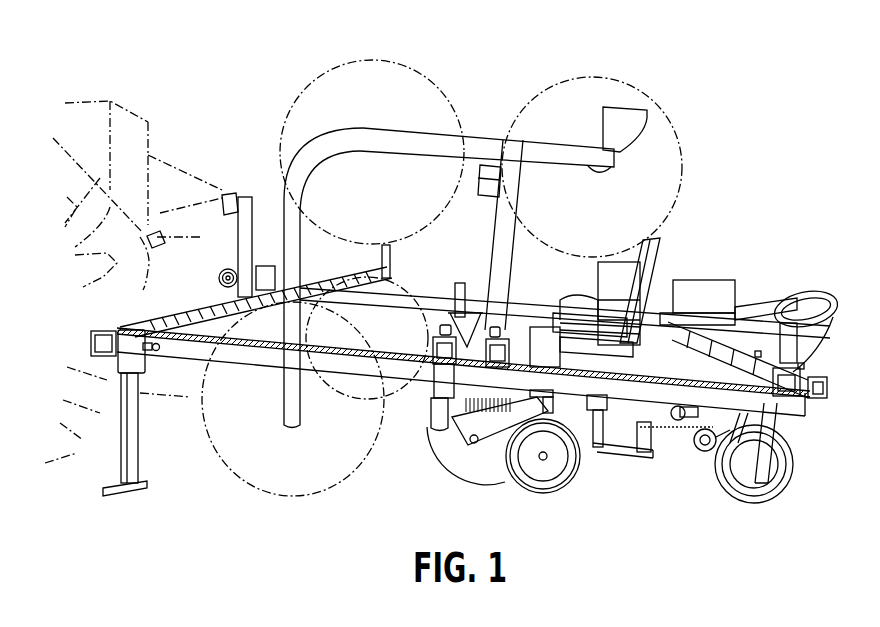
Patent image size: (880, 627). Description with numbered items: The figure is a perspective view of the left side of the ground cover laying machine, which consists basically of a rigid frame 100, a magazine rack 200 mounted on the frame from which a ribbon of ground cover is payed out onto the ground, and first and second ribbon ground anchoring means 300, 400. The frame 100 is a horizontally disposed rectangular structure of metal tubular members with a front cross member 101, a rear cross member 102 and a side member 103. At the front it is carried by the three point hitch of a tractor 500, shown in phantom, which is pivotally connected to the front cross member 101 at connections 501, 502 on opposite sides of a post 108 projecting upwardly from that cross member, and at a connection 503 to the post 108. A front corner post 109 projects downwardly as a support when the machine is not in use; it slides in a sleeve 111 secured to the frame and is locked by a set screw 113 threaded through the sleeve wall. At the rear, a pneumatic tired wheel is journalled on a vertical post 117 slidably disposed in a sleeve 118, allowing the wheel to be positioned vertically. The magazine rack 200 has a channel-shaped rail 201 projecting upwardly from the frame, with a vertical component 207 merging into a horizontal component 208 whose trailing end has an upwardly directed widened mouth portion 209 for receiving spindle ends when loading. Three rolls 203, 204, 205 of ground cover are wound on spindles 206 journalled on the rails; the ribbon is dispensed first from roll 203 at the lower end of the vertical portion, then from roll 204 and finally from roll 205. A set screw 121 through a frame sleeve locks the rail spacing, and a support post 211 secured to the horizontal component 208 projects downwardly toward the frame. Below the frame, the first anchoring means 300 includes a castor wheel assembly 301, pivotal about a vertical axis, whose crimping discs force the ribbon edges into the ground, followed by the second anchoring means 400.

The rigid frame 100 is at (360, 383).
The front cross member 101 is at (197, 348).
The rear cross member 102 is at (733, 357).
The side member 103 is at (208, 390).
The post 108 is at (265, 235).
The post 109 is at (122, 490).
The sleeve 111 is at (100, 372).
The set screw 113 is at (157, 352).
The vertical post 117 is at (787, 327).
The sleeve 118 is at (827, 325).
The set screw 121 is at (343, 313).
The magazine rack 200 is at (563, 143).
The rail 201 is at (483, 130).
The roll 203 is at (303, 489).
The roll 204 is at (476, 125).
The roll 205 is at (683, 153).
The spindle 206 is at (373, 127).
The vertical component 207 is at (350, 228).
The horizontal component 208 is at (430, 143).
The widened mouth portion 209 is at (627, 112).
The support post 211 is at (493, 258).
The first ribbon ground anchoring means 300 is at (489, 481).
The castor wheel assembly 301 is at (594, 470).
The second ribbon ground anchoring means 400 is at (660, 442).
The tractor 500 is at (167, 157).
The pivotal connection 501 is at (218, 278).
The pivotal connection 502 is at (172, 218).
The hitch connection 503 is at (233, 198).